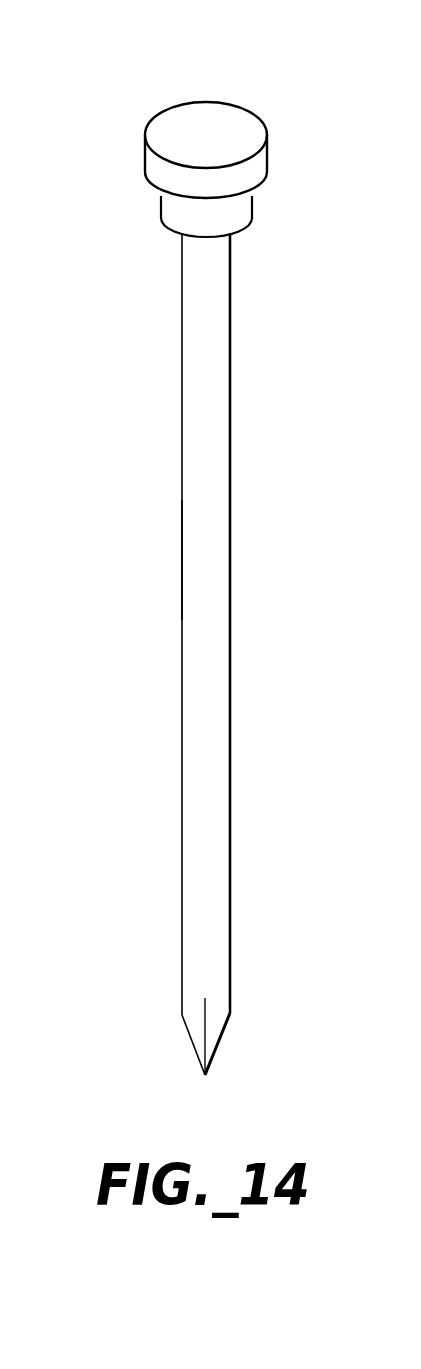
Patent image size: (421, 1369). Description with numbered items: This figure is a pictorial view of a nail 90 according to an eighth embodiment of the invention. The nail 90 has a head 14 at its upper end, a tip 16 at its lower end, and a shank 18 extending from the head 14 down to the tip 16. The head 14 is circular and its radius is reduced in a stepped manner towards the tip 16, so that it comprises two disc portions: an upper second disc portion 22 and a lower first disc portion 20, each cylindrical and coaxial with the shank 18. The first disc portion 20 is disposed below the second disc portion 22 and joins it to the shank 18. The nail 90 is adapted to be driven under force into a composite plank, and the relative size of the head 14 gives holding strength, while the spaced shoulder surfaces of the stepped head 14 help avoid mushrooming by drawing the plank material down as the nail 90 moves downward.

The head 14 is at (218, 82).
The second disc portion 22 is at (131, 133).
The first disc portion 20 is at (158, 227).
The shank 18 is at (217, 412).
The nail 90 is at (169, 556).
The tip 16 is at (208, 1075).